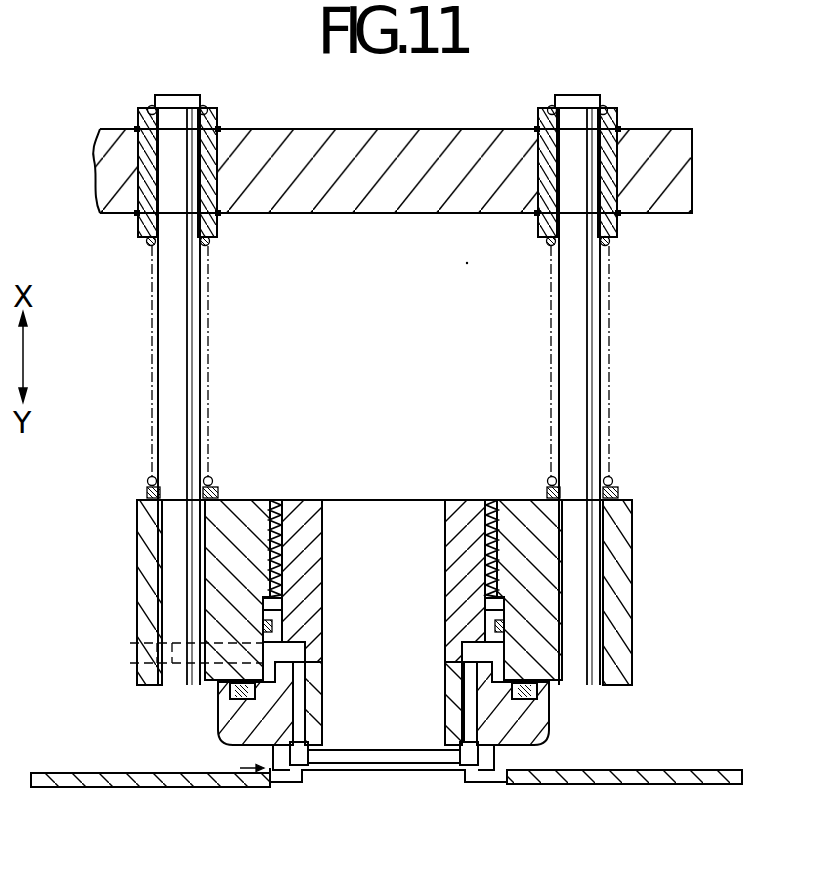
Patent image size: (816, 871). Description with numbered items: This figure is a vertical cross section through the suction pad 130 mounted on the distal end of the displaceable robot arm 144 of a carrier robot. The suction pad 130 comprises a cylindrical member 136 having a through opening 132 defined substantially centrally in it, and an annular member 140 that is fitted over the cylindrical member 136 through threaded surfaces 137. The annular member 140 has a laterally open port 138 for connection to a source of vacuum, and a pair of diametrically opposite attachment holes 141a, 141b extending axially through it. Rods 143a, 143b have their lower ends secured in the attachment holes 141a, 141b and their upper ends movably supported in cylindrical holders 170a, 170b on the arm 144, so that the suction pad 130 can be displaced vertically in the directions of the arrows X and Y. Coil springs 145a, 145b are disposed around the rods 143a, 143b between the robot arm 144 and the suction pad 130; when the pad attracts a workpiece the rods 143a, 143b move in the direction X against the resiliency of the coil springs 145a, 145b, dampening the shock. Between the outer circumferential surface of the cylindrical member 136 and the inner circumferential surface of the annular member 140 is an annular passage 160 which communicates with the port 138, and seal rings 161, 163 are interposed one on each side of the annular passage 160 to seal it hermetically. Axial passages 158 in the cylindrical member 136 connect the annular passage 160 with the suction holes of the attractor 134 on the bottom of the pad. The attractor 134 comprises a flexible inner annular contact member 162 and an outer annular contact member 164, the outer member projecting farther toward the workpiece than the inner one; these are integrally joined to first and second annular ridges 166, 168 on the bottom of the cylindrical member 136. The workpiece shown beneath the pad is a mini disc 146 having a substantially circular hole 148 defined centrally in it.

The suction pad 130 is at (718, 442).
The through opening 132 is at (345, 505).
The attractor 134 is at (258, 780).
The cylindrical member 136 is at (540, 720).
The threaded surfaces 137 is at (290, 505).
The port 138 is at (163, 657).
The annular member 140 is at (622, 522).
The attachment hole 141a is at (165, 578).
The attachment hole 141b is at (622, 555).
The rod 143a is at (170, 318).
The rod 143b is at (583, 352).
The robot arm 144 is at (688, 176).
The coil spring 145a is at (150, 243).
The coil spring 145b is at (607, 243).
The mini disc 146 is at (722, 771).
The hole 148 is at (443, 772).
The axial passage 158 is at (290, 708).
The annular passage 160 is at (245, 690).
The seal ring 161 is at (482, 668).
The inner annular contact member 162 is at (335, 772).
The seal ring 163 is at (505, 625).
The outer annular contact member 164 is at (283, 790).
The first annular ridge 166 is at (425, 768).
The second annular ridge 168 is at (490, 772).
The cylindrical holder 170a is at (210, 147).
The cylindrical holder 170b is at (608, 148).